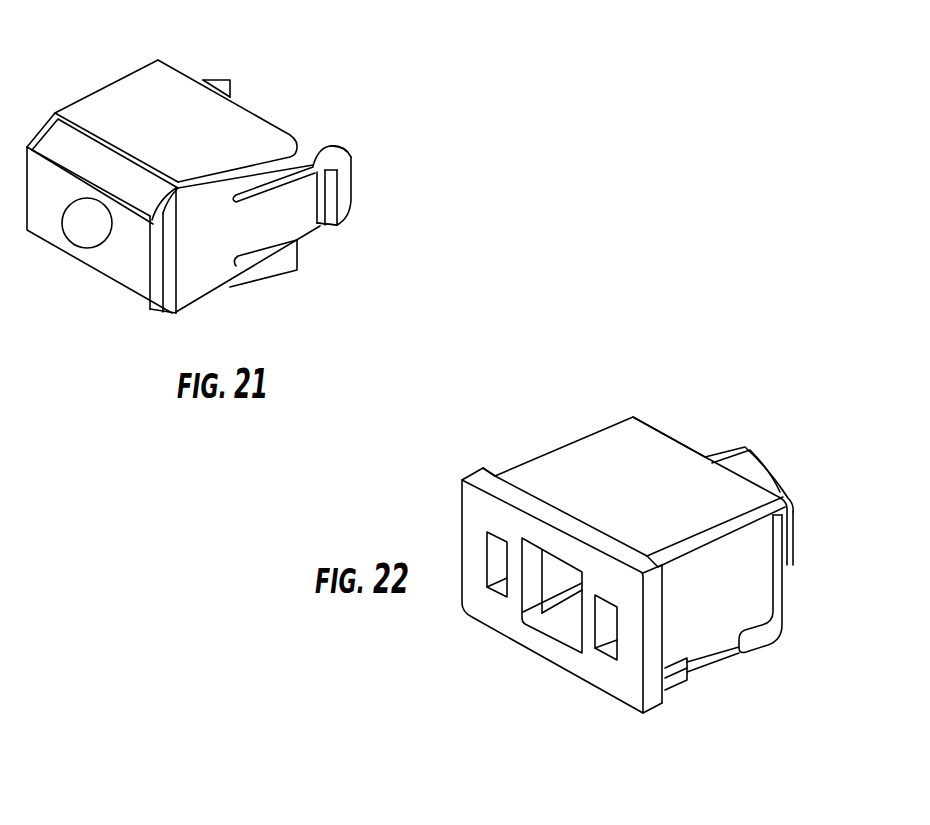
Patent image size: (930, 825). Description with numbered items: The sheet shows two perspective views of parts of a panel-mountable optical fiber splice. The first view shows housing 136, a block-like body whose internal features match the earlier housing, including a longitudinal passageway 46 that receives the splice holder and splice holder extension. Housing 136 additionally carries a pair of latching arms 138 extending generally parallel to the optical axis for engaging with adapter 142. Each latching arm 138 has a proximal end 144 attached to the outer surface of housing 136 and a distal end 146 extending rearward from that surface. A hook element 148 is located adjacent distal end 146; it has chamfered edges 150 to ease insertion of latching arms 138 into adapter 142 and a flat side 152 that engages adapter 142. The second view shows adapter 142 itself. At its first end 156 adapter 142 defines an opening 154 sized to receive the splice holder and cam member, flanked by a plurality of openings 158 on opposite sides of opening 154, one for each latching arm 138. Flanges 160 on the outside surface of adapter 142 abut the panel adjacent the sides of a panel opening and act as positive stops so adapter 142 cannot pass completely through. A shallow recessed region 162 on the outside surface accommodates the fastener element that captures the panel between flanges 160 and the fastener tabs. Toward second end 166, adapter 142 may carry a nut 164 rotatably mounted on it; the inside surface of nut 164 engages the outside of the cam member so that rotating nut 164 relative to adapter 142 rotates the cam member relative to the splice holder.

In FIG. 21, the passageway 46 is at (98, 236).
In FIG. 21, the housing 136 is at (121, 339).
In FIG. 21, the latching arms 138 is at (213, 80).
In FIG. 21, the proximal end 144 is at (243, 227).
In FIG. 21, the distal end 146 is at (350, 151).
In FIG. 21, the hook element 148 is at (336, 227).
In FIG. 21, the chamfered edges 150 is at (348, 193).
In FIG. 21, the flat side 152 is at (312, 163).
In FIG. 22, the adapter 142 is at (476, 698).
In FIG. 22, the opening 154 is at (568, 617).
In FIG. 22, the first end 156 is at (480, 612).
In FIG. 22, the openings 158 is at (493, 561).
In FIG. 22, the flanges 160 is at (492, 472).
In FIG. 22, the shallow recessed region 162 is at (740, 603).
In FIG. 22, the nut 164 is at (762, 463).
In FIG. 22, the second end 166 is at (669, 428).